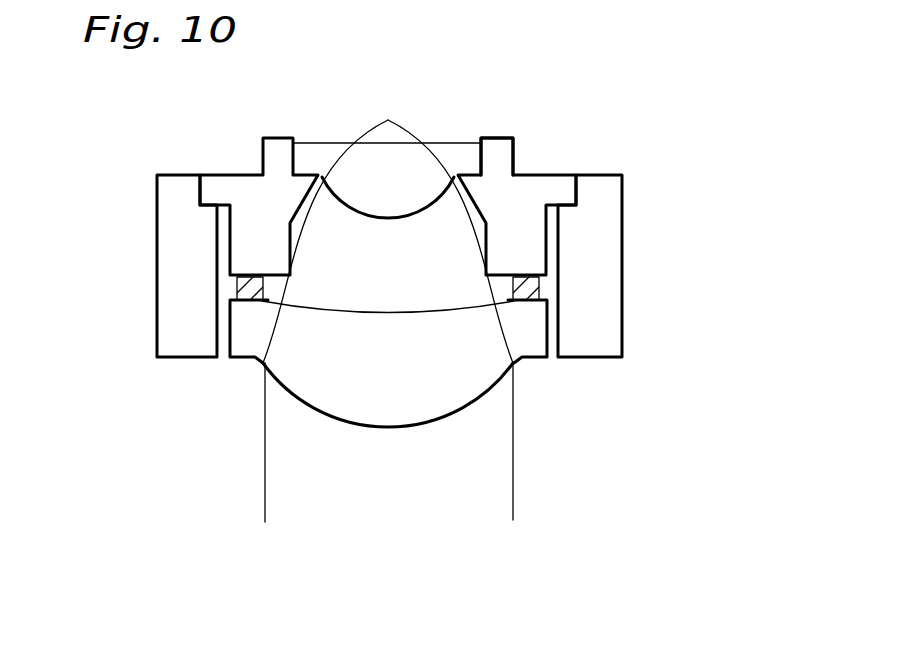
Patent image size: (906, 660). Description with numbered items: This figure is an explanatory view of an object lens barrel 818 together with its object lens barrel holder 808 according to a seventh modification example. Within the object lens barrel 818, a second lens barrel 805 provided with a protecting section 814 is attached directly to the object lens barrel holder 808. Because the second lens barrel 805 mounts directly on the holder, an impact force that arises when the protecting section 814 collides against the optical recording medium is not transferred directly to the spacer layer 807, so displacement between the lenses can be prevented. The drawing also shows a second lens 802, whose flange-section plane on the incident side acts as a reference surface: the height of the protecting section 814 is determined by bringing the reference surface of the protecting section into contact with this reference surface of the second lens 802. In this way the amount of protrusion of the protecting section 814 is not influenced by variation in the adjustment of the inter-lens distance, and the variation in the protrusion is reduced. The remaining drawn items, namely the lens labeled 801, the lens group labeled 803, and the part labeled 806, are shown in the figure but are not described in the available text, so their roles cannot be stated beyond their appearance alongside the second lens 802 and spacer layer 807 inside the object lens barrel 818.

The second lens 801 is at (488, 495).
The second lens 802 is at (403, 198).
The lens group 803 is at (388, 342).
The second lens barrel 805 is at (537, 192).
The spacer (left) 806 is at (290, 273).
The spacer layer 807 is at (545, 290).
The object lens barrel holder 808 is at (607, 325).
The protecting section 814 is at (500, 148).
The object lens barrel 818 is at (560, 419).